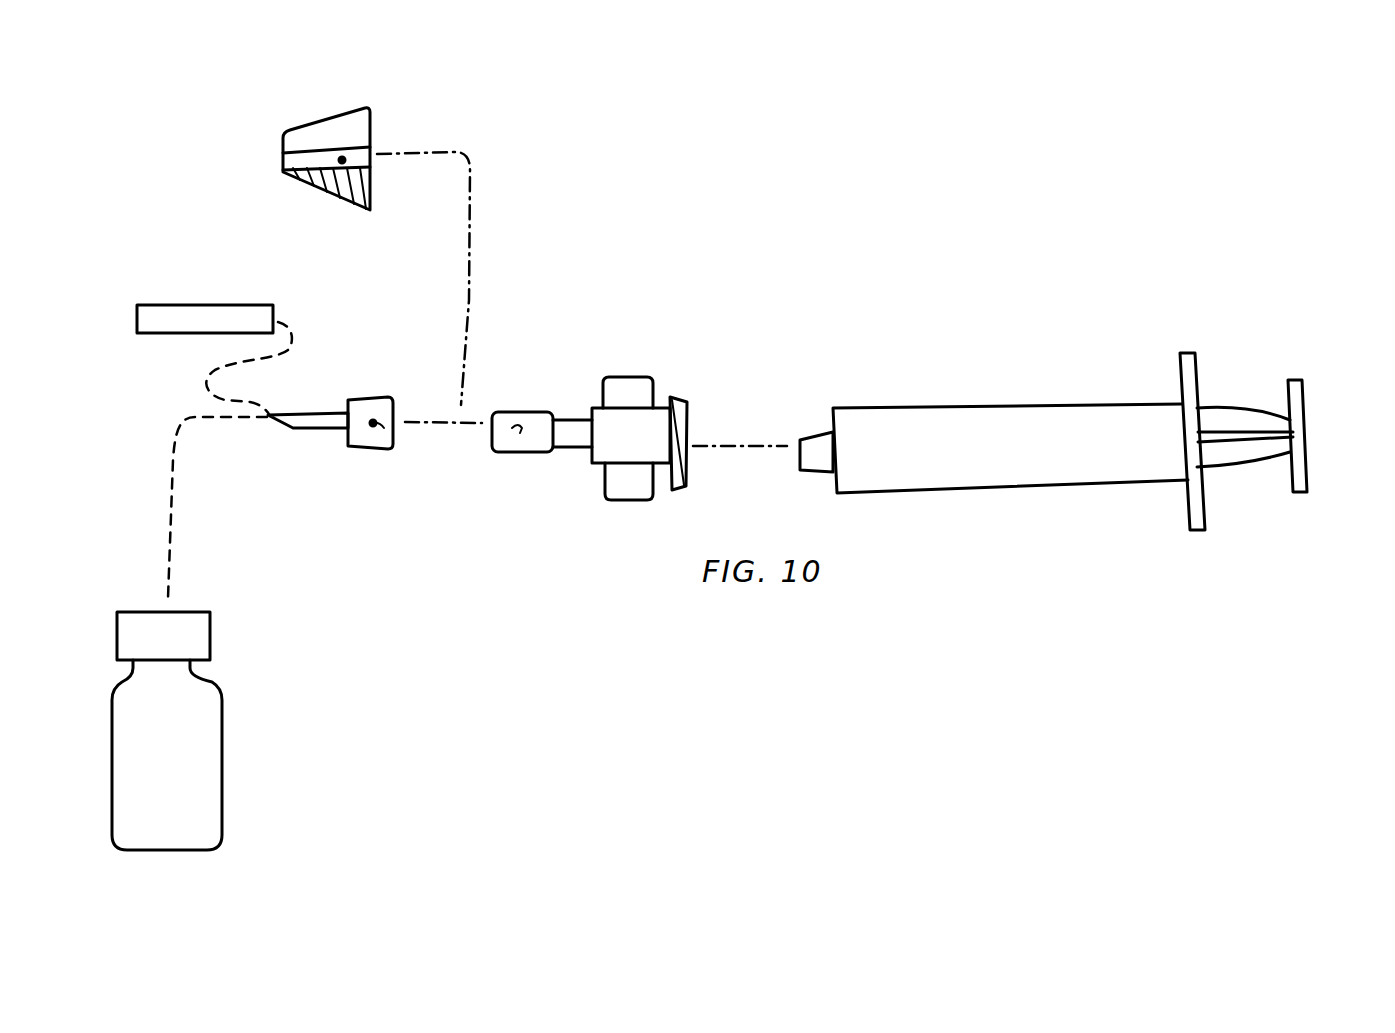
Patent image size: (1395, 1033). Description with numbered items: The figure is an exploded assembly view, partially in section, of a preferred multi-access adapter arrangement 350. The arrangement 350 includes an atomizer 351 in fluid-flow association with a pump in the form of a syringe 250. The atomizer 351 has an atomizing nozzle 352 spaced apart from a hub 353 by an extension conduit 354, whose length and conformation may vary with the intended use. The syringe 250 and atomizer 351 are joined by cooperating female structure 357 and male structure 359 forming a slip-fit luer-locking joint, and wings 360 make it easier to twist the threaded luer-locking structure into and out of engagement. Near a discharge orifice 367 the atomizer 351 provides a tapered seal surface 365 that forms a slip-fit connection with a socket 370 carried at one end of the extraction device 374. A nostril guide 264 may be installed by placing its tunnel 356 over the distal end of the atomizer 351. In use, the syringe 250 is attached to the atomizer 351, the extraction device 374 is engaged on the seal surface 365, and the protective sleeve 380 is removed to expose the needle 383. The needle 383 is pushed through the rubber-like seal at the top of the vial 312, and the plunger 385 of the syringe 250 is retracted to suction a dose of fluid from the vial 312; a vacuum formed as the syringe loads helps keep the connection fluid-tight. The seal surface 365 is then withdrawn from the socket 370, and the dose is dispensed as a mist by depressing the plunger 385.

The syringe 250 is at (1050, 423).
The nostril guide 264 is at (333, 127).
The vial 312 is at (205, 772).
The multi-access adapter arrangement 350 is at (1060, 188).
The atomizer 351 is at (579, 362).
The atomizing nozzle 352 is at (532, 440).
The hub 353 is at (622, 432).
The extension conduit 354 is at (573, 435).
The tunnel 356 is at (342, 160).
The female structure 357 is at (702, 437).
The male structure 359 is at (812, 411).
The wings 360 is at (640, 487).
The seal surface 365 is at (520, 430).
The discharge orifice 367 is at (484, 431).
The socket 370 is at (395, 430).
The extraction device 374 is at (330, 452).
The protective sleeve 380 is at (202, 317).
The needle 383 is at (308, 414).
The plunger 385 is at (1298, 405).